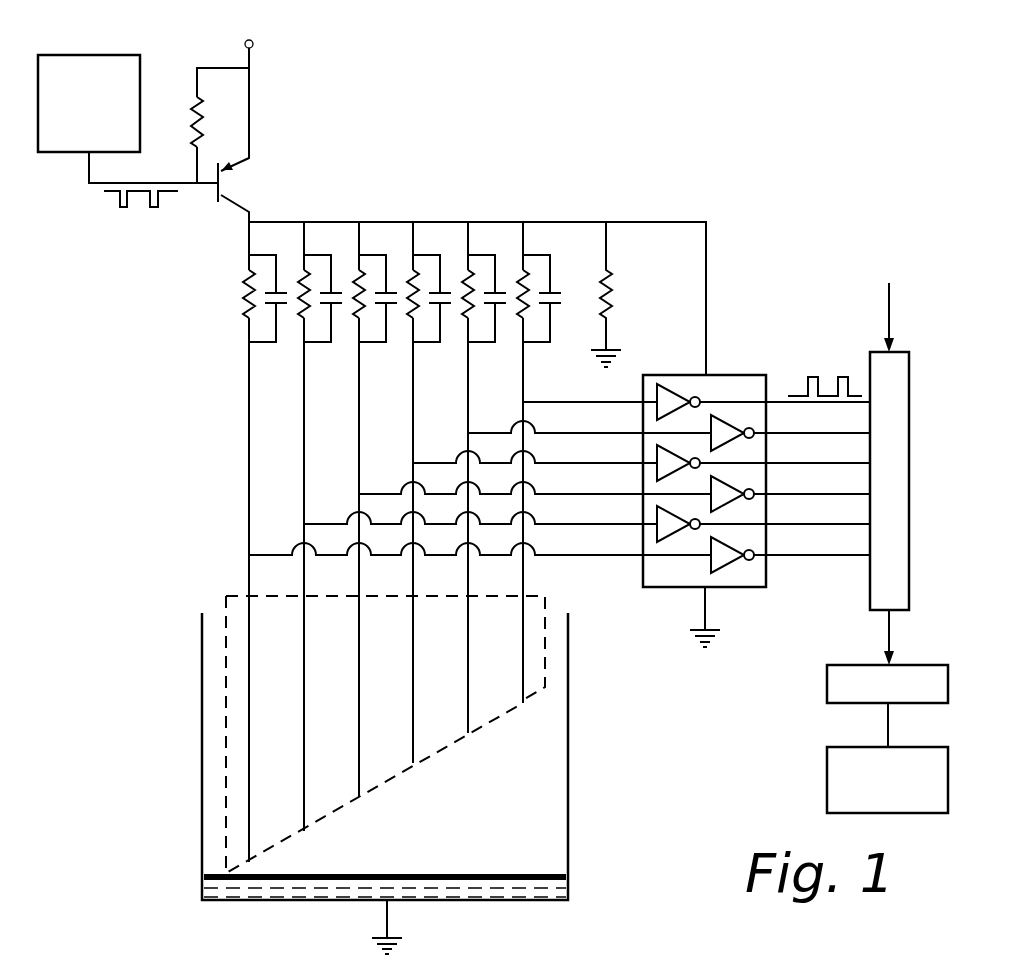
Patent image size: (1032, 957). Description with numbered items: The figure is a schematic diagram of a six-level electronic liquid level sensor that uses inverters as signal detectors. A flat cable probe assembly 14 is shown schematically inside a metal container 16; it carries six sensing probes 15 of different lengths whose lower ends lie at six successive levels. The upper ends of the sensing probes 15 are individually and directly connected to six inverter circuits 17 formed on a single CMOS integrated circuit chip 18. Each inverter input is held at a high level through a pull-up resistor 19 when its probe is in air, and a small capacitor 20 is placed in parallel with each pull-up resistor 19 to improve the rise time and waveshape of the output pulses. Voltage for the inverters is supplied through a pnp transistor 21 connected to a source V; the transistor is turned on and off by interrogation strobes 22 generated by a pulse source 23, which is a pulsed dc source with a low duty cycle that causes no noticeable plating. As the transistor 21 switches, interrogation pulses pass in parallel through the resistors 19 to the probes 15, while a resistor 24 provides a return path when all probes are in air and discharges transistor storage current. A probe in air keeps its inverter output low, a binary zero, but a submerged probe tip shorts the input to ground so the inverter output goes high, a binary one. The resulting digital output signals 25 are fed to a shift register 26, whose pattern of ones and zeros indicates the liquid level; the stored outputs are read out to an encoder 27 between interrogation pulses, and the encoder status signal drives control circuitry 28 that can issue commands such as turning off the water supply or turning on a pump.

The flat cable probe assembly 14 is at (218, 606).
The sensing probes 15 is at (248, 578).
The container 16 is at (202, 752).
The inverter circuits 17 is at (684, 392).
The integrated circuit chip 18 is at (712, 376).
The pull-up resistors 19 is at (244, 296).
The capacitor 20 is at (553, 300).
The pnp transistor 21 is at (226, 186).
The interrogation strobes 22 is at (120, 210).
The pulse source 23 is at (72, 56).
The resistor 24 is at (612, 295).
The digital output signals 25 is at (818, 382).
The shift register 26 is at (909, 455).
The encoder 27 is at (844, 662).
The control circuitry 28 is at (846, 746).